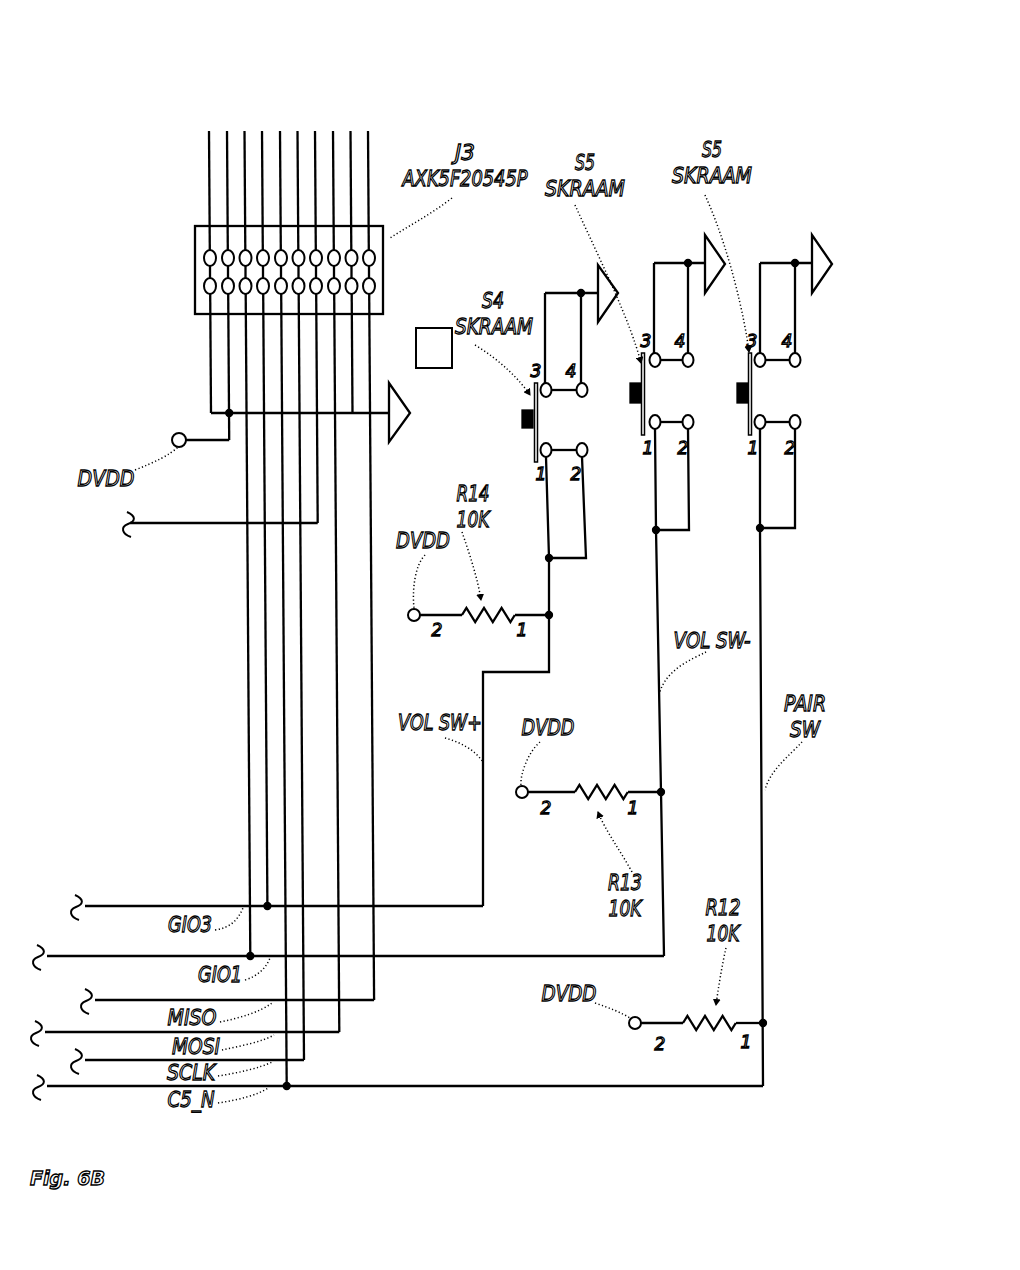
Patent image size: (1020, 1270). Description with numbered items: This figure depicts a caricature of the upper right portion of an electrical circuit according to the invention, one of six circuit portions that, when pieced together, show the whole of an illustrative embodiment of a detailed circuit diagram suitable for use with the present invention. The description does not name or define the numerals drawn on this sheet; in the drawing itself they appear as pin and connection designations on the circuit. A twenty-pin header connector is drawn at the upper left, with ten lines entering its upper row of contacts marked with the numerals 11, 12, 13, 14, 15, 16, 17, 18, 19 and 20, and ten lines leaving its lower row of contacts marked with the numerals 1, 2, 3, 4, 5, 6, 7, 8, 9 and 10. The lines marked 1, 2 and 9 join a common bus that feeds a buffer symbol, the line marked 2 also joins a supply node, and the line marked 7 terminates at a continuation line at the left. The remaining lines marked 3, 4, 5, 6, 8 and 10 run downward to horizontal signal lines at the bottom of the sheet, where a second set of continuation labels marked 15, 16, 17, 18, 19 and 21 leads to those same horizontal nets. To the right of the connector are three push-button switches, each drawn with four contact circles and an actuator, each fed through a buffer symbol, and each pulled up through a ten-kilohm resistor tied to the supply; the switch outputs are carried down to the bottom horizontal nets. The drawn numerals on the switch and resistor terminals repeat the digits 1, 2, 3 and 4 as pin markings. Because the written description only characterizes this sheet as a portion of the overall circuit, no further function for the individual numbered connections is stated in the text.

The connector J3 pin 1 is at (211, 342).
The connector J3 pin 2 is at (229, 355).
The connector J3 pin 3 is at (247, 368).
The connector J3 pin 4 is at (265, 381).
The connector J3 pin 5 is at (283, 394).
The connector J3 pin 6 is at (300, 440).
The connector J3 pin 7 is at (318, 465).
The connector J3 pin 8 is at (337, 348).
The connector J3 pin 9 is at (353, 372).
The connector J3 pin 10 is at (372, 393).
The connector J3 pin 11 is at (209, 128).
The connector J3 pin 12 is at (227, 128).
The connector J3 pin 13 is at (244, 128).
The connector J3 pin 14 is at (262, 128).
The connector J3 pin 15 is at (280, 128).
The connector J3 pin 16 is at (298, 128).
The connector J3 pin 17 is at (315, 128).
The connector J3 pin 18 is at (333, 128).
The connector J3 pin 19 is at (350, 128).
The connector J3 pin 20 is at (368, 128).
The signal line 21 (GIO3) 21 is at (146, 906).